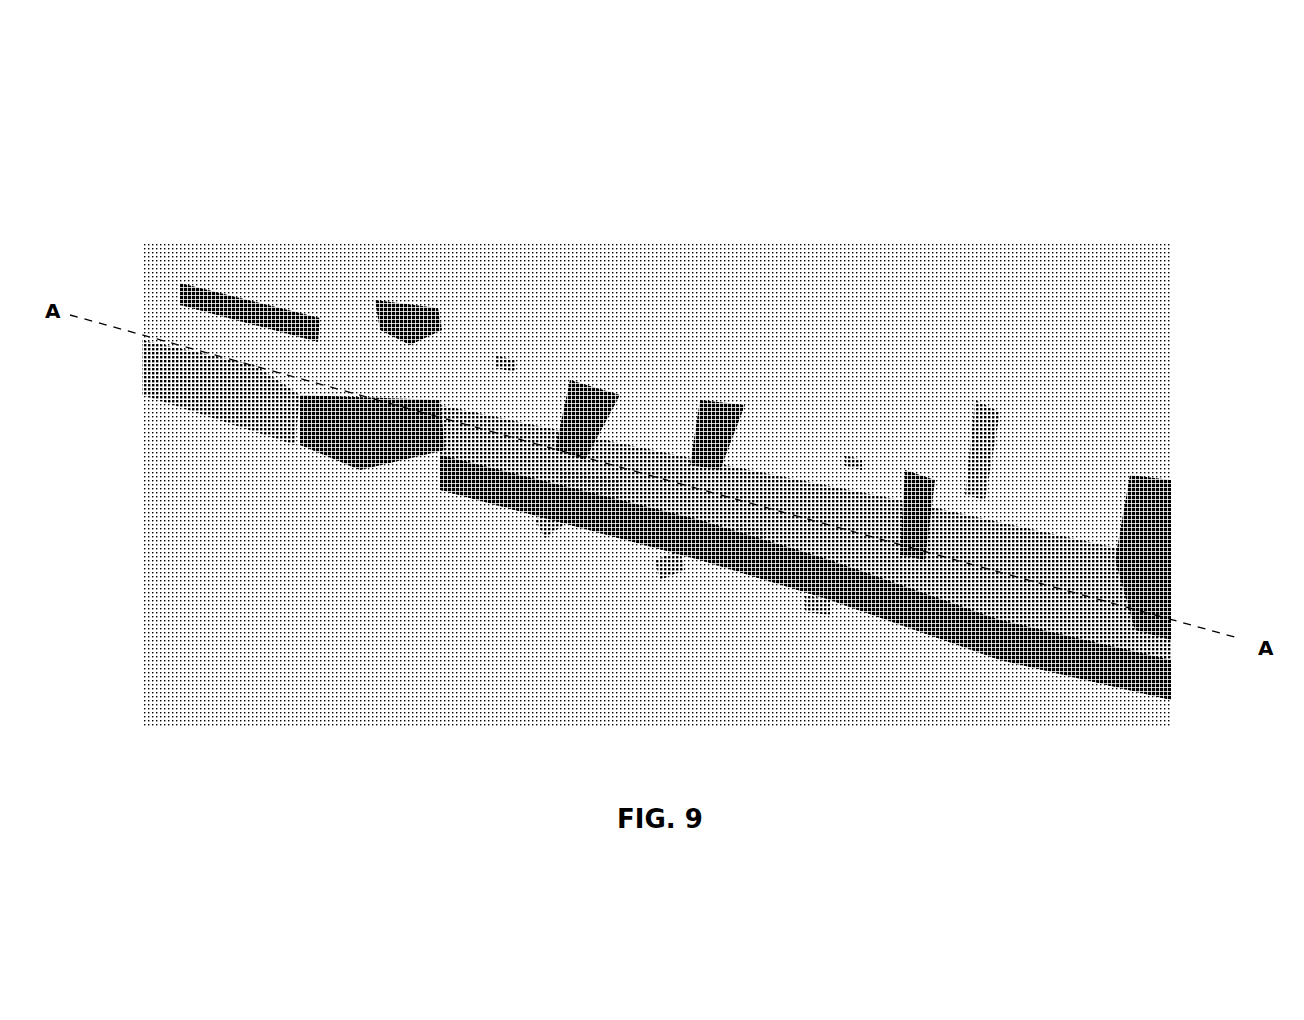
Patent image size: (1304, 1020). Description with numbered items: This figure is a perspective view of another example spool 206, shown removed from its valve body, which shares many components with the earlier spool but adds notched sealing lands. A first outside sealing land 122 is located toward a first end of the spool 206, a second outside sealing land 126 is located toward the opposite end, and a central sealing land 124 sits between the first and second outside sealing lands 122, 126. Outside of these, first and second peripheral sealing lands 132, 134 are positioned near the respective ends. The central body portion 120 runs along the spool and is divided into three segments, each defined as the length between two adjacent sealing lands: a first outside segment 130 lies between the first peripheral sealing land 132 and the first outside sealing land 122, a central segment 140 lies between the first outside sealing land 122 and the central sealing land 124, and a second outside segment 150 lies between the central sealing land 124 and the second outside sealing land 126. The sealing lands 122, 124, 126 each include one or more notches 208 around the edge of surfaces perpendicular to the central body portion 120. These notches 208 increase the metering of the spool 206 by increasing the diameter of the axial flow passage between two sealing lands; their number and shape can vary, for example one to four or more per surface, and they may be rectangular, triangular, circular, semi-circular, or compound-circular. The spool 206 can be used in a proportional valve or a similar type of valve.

The spool 206 is at (103, 100).
The central body portion 120 is at (590, 488).
The first outside sealing land 122 is at (561, 365).
The central sealing land 124 is at (707, 395).
The second outside sealing land 126 is at (911, 458).
The first outside segment 130 is at (440, 457).
The first peripheral sealing land 132 is at (393, 300).
The second peripheral sealing land 134 is at (985, 480).
The central segment 140 is at (606, 508).
The second outside segment 150 is at (750, 540).
The notches 208 is at (502, 363).